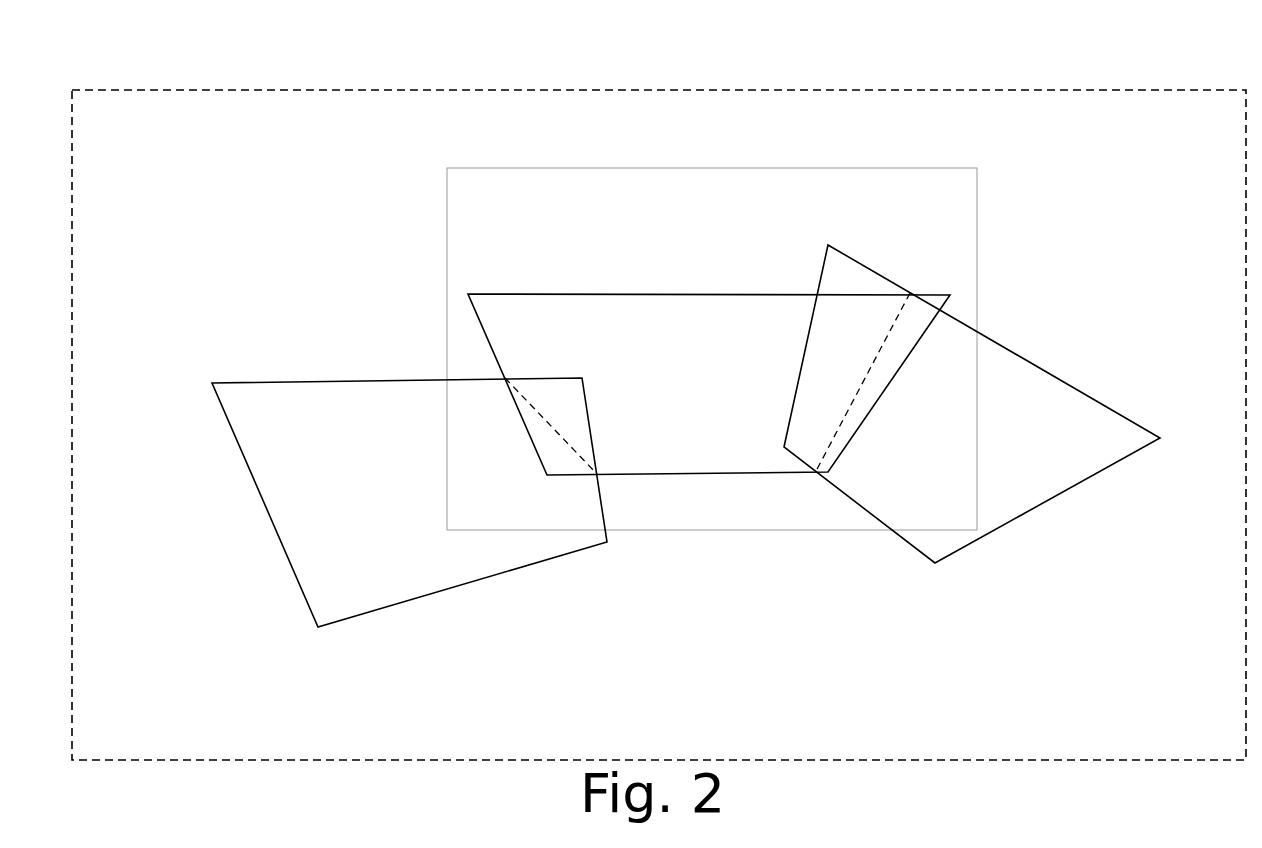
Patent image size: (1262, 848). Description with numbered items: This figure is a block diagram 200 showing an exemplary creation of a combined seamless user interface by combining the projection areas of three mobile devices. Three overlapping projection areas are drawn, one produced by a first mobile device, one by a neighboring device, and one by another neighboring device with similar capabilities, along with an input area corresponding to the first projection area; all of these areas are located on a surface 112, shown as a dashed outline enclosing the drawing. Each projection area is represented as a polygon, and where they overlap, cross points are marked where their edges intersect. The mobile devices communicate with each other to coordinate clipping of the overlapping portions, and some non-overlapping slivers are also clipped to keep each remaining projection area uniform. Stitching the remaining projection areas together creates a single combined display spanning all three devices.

The environment 200 is at (1102, 76).
The surface 112 is at (257, 158).